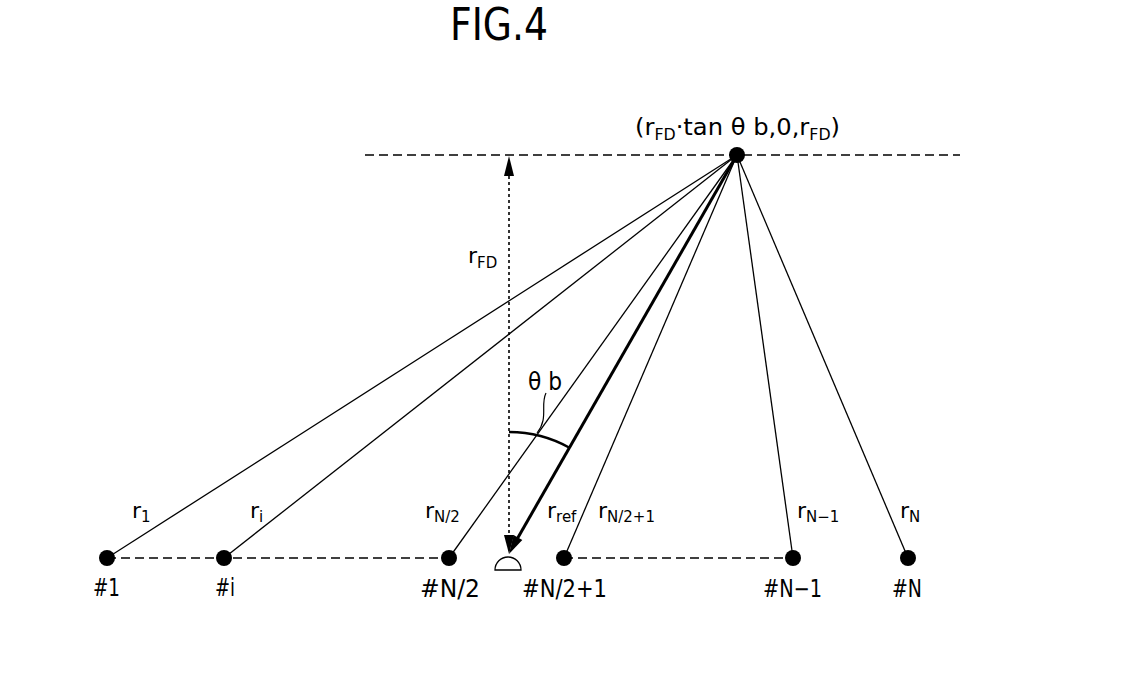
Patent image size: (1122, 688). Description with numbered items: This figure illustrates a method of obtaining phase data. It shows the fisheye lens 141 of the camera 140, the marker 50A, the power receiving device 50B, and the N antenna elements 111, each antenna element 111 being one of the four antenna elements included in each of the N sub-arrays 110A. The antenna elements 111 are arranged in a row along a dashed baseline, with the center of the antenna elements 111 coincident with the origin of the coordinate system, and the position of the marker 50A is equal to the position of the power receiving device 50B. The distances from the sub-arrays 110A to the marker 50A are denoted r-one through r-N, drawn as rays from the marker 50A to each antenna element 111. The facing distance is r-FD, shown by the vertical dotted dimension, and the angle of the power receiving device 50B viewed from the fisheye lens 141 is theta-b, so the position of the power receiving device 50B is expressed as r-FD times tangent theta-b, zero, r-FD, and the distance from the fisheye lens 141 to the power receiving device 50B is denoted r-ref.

The sub-array 110A is at (479, 513).
The antenna element 111 is at (107, 550).
The marker 50A is at (841, 137).
The power receiving device 50B is at (745, 152).
The camera 140 is at (562, 599).
The fisheye lens 141 is at (511, 572).